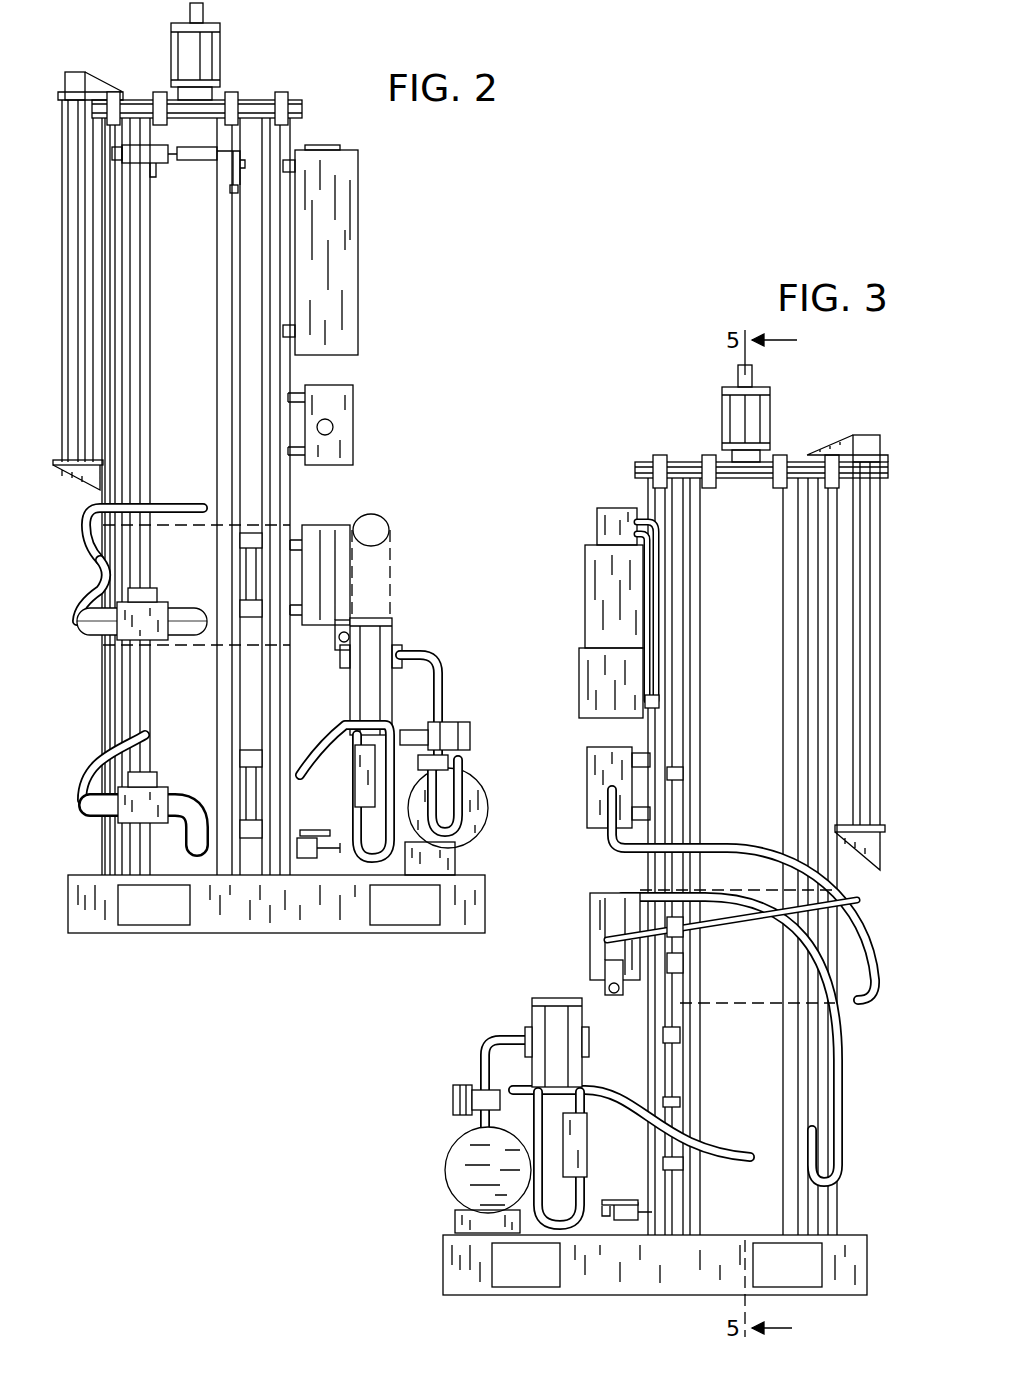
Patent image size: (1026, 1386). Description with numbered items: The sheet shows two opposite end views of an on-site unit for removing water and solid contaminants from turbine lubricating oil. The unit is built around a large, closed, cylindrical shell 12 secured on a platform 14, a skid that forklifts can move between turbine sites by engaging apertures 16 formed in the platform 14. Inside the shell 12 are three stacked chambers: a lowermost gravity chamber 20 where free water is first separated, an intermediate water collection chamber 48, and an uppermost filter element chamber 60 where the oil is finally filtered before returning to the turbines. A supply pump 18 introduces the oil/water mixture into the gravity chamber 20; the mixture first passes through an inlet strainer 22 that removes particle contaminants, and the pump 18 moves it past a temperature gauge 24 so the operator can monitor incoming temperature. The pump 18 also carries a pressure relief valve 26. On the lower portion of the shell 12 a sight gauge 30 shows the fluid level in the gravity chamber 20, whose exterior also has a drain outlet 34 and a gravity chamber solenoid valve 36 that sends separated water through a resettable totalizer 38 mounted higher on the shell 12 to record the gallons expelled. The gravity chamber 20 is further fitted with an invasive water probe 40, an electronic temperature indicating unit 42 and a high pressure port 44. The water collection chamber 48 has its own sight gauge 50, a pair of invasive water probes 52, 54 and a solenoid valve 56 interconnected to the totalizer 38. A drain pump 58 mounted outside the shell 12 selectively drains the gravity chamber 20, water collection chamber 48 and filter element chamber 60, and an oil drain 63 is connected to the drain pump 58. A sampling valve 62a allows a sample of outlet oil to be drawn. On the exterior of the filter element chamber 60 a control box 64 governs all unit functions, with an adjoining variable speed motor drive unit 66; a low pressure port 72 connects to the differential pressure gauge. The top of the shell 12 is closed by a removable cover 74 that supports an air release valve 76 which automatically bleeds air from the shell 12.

In FIG. 2, the cylindrical shell 12 is at (294, 140).
In FIG. 3, the cylindrical shell 12 is at (834, 872).
In FIG. 2, the platform 14 is at (252, 905).
In FIG. 3, the platform 14 is at (680, 1282).
In FIG. 2, the apertures 16 is at (150, 918).
In FIG. 3, the apertures 16 is at (535, 1280).
In FIG. 2, the supply pump 18 is at (462, 818).
In FIG. 3, the supply pump 18 is at (465, 1190).
In FIG. 2, the gravity chamber 20 is at (160, 690).
In FIG. 3, the gravity chamber 20 is at (810, 1210).
In FIG. 2, the inlet strainer 22 is at (372, 665).
In FIG. 3, the inlet strainer 22 is at (545, 1026).
In FIG. 2, the temperature gauge 24 is at (462, 730).
In FIG. 3, the temperature gauge 24 is at (455, 1105).
In FIG. 2, the pressure relief valve 26 is at (348, 870).
In FIG. 3, the pressure relief valve 26 is at (588, 1162).
In FIG. 2, the sight gauge 30 is at (240, 785).
In FIG. 2, the drain outlet 34 is at (300, 838).
In FIG. 3, the drain outlet 34 is at (620, 1222).
In FIG. 2, the gravity chamber solenoid valve 36 is at (100, 790).
In FIG. 2, the resettable totalizer 38 is at (350, 424).
In FIG. 3, the resettable totalizer 38 is at (587, 830).
In FIG. 3, the invasive water probe 40 is at (685, 1165).
In FIG. 3, the electronic temperature indicating unit 42 is at (685, 1103).
In FIG. 3, the high pressure port 44 is at (685, 1038).
In FIG. 2, the water collection chamber 48 is at (165, 540).
In FIG. 3, the water collection chamber 48 is at (828, 1005).
In FIG. 2, the sight gauge 50 is at (240, 580).
In FIG. 3, the invasive water probe 52 is at (690, 968).
In FIG. 3, the invasive water probe 54 is at (690, 930).
In FIG. 2, the solenoid valve 56 is at (112, 645).
In FIG. 2, the drain pump 58 is at (355, 525).
In FIG. 3, the drain pump 58 is at (590, 945).
In FIG. 2, the filter element chamber 60 is at (160, 296).
In FIG. 3, the filter element chamber 60 is at (815, 632).
In FIG. 2, the sampling valve 62a is at (226, 176).
In FIG. 2, the oil drain 63 is at (200, 500).
In FIG. 2, the control box 64 is at (335, 258).
In FIG. 3, the control box 64 is at (585, 580).
In FIG. 3, the variable speed motor drive unit 66 is at (600, 612).
In FIG. 3, the low pressure port 72 is at (683, 774).
In FIG. 2, the removable cover 74 is at (250, 100).
In FIG. 3, the removable cover 74 is at (675, 462).
In FIG. 2, the air release valve 76 is at (205, 62).
In FIG. 3, the air release valve 76 is at (722, 430).